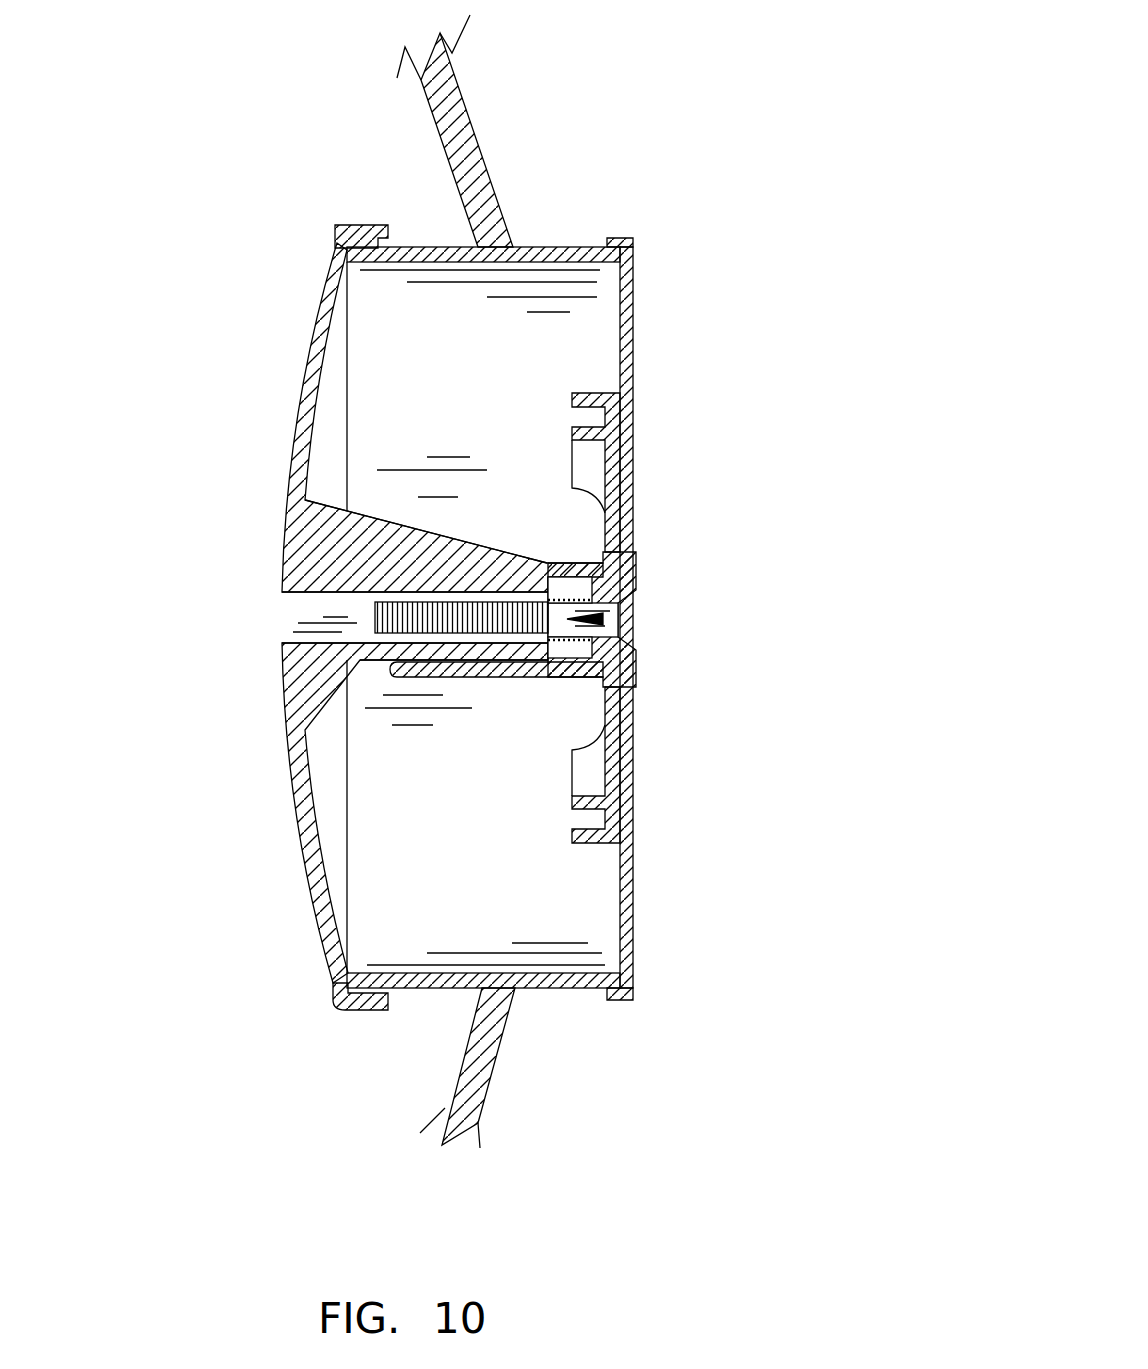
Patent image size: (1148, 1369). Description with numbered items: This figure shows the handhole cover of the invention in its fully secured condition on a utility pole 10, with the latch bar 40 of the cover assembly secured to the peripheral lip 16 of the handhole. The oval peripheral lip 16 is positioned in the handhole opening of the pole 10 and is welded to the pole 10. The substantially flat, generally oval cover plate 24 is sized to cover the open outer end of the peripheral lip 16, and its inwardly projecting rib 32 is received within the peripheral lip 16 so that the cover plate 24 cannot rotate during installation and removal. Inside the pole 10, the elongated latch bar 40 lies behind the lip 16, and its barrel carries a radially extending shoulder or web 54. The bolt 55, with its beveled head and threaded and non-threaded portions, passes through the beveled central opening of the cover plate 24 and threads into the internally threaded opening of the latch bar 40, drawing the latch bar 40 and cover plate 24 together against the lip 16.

The utility pole 10 is at (462, 143).
The peripheral lip 16 is at (552, 250).
The cover plate 24 is at (654, 354).
The rib 32 is at (477, 677).
The latch bar 40 is at (244, 436).
The web 54 is at (398, 540).
The bolt 55 is at (517, 590).